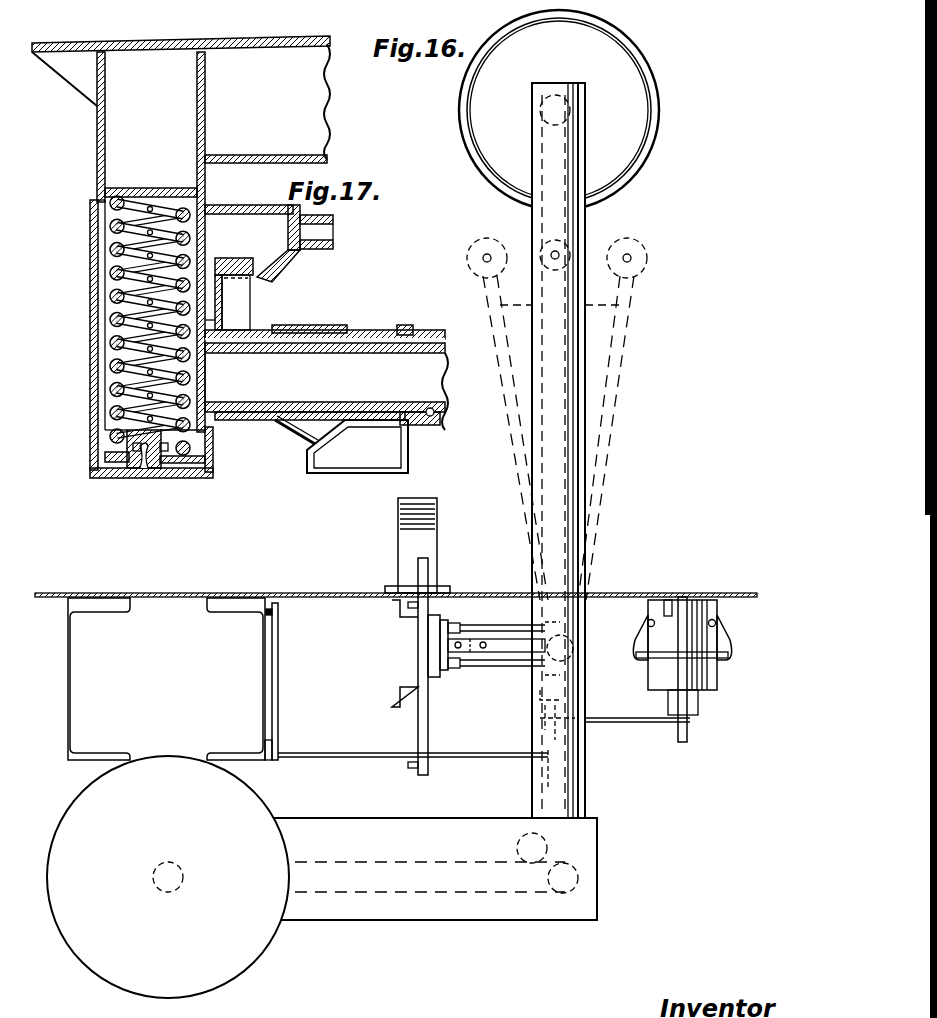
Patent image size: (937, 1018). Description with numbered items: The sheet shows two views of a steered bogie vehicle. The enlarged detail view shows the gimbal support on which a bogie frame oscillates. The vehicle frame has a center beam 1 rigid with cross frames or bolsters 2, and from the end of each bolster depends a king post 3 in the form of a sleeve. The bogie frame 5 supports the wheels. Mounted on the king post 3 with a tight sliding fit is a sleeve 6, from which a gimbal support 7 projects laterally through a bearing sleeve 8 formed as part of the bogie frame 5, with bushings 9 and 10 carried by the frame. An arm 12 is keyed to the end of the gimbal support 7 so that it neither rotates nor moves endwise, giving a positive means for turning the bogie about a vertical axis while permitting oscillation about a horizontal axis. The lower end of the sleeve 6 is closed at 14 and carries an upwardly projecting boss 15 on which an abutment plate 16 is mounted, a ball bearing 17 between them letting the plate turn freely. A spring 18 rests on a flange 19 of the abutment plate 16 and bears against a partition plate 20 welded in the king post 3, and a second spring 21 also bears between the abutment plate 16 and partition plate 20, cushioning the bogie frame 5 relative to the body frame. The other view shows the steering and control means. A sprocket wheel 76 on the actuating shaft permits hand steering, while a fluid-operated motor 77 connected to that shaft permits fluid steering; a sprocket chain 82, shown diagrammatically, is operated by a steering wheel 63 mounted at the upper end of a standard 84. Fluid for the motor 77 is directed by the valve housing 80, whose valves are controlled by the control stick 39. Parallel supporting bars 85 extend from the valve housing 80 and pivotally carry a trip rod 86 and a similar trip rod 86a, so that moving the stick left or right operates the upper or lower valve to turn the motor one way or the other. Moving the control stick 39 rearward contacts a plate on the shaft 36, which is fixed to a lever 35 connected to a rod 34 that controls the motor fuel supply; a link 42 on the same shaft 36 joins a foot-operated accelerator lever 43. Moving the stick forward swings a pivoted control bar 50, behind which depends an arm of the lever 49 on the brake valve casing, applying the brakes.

In FIG. 16, the center beam 1 is at (70, 686).
In FIG. 17, the cross frame or bolster 2 is at (172, 43).
In FIG. 17, the king post 3 is at (205, 103).
In FIG. 17, the bogie frame 5 is at (340, 474).
In FIG. 17, the sleeve 6 is at (90, 294).
In FIG. 17, the gimbal support 7 is at (297, 396).
In FIG. 17, the bearing sleeve 8 is at (310, 320).
In FIG. 17, the bushing 9 is at (366, 352).
In FIG. 17, the bushing 10 is at (250, 352).
In FIG. 17, the arm 12 is at (358, 270).
In FIG. 17, the closed end 14 is at (180, 476).
In FIG. 17, the boss 15 is at (145, 478).
In FIG. 17, the abutment plate 16 is at (116, 432).
In FIG. 17, the ball bearing 17 is at (110, 455).
In FIG. 17, the spring 18 is at (235, 302).
In FIG. 17, the flange 19 is at (200, 454).
In FIG. 17, the partition plate 20 is at (140, 188).
In FIG. 17, the second spring 21 is at (216, 205).
In FIG. 16, the rod 34 is at (279, 612).
In FIG. 16, the lever 35 is at (279, 681).
In FIG. 16, the shaft 36 is at (478, 758).
In FIG. 16, the control stick 39 is at (482, 290).
In FIG. 16, the link 42 is at (430, 720).
In FIG. 16, the foot-operated accelerator lever 43 is at (410, 546).
In FIG. 16, the lever 49 is at (690, 678).
In FIG. 16, the control bar 50 is at (633, 723).
In FIG. 16, the wheel 63 is at (660, 130).
In FIG. 16, the sprocket wheel 76 is at (178, 866).
In FIG. 16, the fluid-operated motor 77 is at (246, 956).
In FIG. 16, the valve housing 80 is at (392, 645).
In FIG. 16, the sprocket chain 82 is at (456, 858).
In FIG. 16, the standard 84 is at (568, 465).
In FIG. 16, the supporting bars 85 is at (560, 648).
In FIG. 16, the trip rod 86 is at (488, 624).
In FIG. 16, the trip rod 86a is at (498, 668).